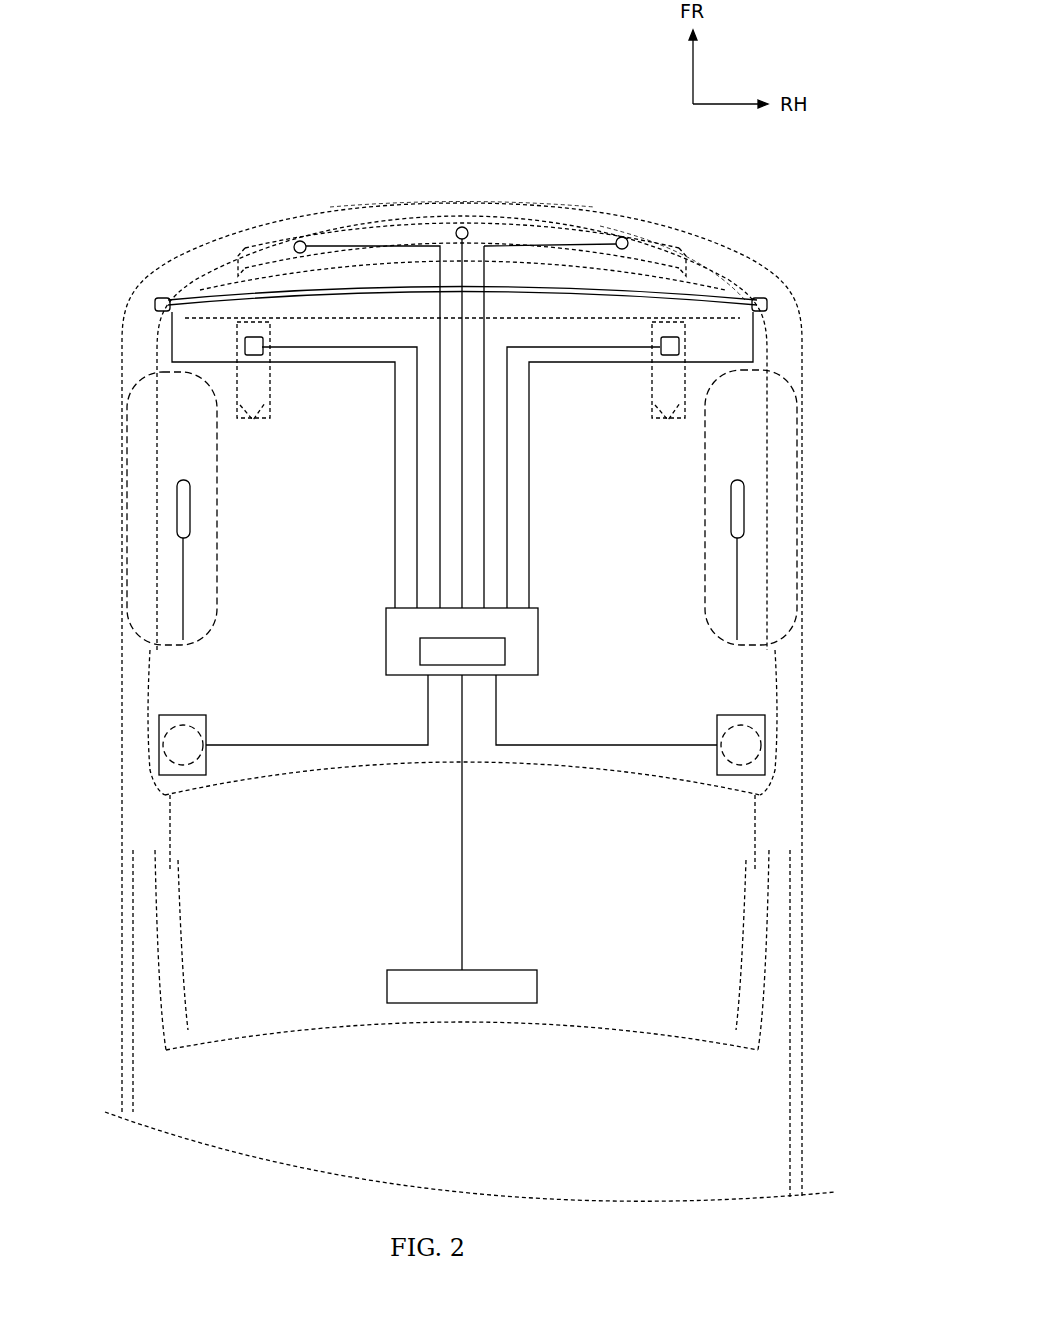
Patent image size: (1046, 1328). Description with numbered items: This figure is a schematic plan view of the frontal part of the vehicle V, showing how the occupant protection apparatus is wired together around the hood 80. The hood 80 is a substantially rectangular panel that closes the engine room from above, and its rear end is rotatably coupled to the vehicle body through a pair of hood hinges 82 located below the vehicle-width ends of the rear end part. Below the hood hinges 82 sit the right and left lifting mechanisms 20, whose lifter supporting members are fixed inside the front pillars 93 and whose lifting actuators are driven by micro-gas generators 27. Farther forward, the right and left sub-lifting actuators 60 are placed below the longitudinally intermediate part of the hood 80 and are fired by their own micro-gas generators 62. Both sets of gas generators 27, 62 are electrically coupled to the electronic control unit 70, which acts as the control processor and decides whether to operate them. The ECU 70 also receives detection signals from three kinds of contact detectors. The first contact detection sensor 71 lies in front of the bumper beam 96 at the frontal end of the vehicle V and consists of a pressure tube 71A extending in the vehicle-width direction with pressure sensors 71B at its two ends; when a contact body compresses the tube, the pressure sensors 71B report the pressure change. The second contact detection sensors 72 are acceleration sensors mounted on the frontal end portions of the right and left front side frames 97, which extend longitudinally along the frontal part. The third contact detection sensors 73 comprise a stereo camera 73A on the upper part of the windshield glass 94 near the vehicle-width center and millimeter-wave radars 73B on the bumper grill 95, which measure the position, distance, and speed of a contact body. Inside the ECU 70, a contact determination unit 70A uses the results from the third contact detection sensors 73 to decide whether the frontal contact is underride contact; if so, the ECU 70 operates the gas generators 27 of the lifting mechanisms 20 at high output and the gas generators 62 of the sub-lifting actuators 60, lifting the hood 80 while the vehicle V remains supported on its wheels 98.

The vehicle V is at (191, 110).
The first contact detection sensor 71 is at (192, 290).
The pressure tube 71A is at (740, 322).
The pressure sensors 71B is at (160, 300).
The second contact detection sensors 72 is at (257, 352).
The third contact detection sensors 73 is at (460, 596).
The stereo camera 73A is at (462, 1003).
The millimeter-wave radars 73B is at (300, 241).
The hood 80 is at (238, 270).
The bumper grill 95 is at (530, 213).
The bumper beam 96 is at (650, 303).
The front side frames 97 is at (255, 410).
The wheels 98 is at (127, 490).
The micro-gas generator 62 is at (191, 495).
The sub-lifting actuators 60 is at (460, 560).
The electronic control unit 70 is at (530, 607).
The contact determination unit 70A is at (507, 650).
The micro-gas generator 27 is at (180, 715).
The lifting mechanisms 20 is at (464, 711).
The hood hinges 82 is at (206, 728).
The front pillar 93 is at (165, 868).
The windshield glass 94 is at (600, 1003).